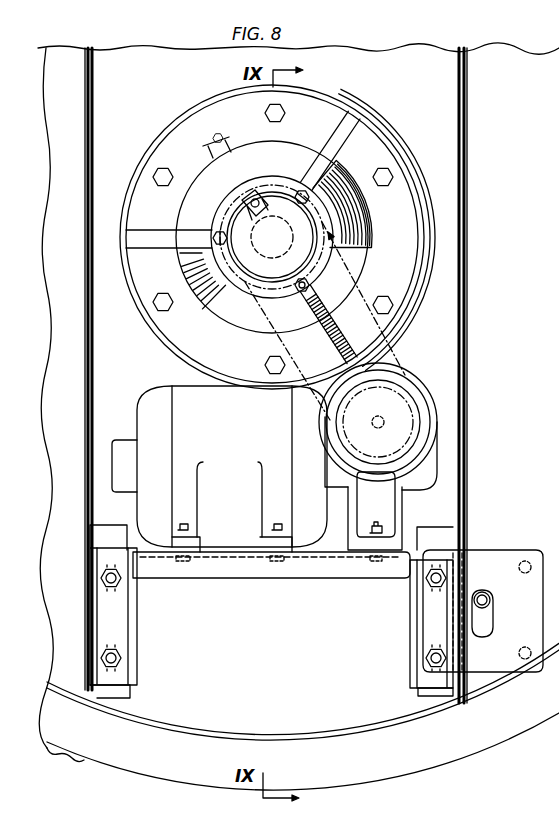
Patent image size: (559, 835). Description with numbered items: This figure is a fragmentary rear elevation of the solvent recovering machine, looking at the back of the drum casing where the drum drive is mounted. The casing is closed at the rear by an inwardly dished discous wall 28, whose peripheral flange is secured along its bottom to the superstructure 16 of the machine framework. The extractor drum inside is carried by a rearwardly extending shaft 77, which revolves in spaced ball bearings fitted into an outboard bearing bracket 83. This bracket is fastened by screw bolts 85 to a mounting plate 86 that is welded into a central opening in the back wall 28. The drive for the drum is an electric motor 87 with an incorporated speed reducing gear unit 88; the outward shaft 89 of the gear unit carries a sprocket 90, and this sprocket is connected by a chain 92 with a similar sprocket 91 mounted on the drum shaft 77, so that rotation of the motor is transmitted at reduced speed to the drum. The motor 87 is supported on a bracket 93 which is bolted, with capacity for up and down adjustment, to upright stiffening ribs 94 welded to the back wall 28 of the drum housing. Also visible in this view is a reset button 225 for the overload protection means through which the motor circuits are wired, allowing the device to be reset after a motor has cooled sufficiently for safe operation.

The superstructure 16 is at (80, 762).
The inwardly dished discous wall 28 is at (46, 311).
The shaft 77 is at (272, 237).
The outboard bearing bracket 83 is at (366, 150).
The screw bolts 85 is at (165, 167).
The mounting plate 86 is at (150, 146).
The electric motor 87 is at (219, 473).
The speed reducing gear unit 88 is at (425, 425).
The outward shaft 89 is at (404, 410).
The sprocket 90 is at (427, 393).
The sprocket 91 is at (302, 296).
The chain 92 is at (272, 339).
The bracket 93 is at (272, 578).
The upright stiffening ribs 94 is at (92, 358).
The reset button 225 is at (490, 600).